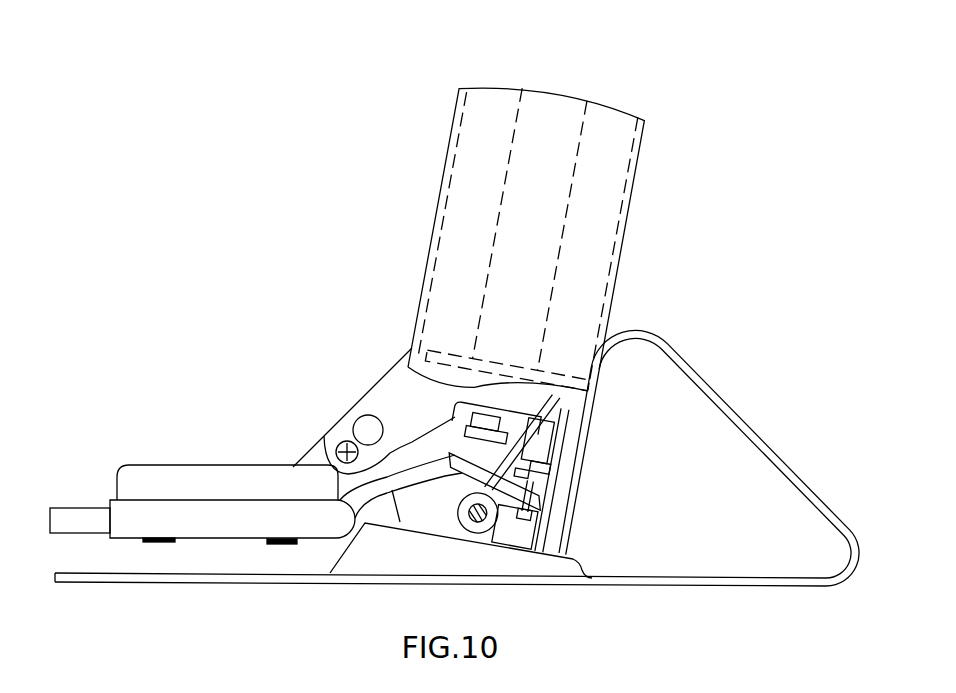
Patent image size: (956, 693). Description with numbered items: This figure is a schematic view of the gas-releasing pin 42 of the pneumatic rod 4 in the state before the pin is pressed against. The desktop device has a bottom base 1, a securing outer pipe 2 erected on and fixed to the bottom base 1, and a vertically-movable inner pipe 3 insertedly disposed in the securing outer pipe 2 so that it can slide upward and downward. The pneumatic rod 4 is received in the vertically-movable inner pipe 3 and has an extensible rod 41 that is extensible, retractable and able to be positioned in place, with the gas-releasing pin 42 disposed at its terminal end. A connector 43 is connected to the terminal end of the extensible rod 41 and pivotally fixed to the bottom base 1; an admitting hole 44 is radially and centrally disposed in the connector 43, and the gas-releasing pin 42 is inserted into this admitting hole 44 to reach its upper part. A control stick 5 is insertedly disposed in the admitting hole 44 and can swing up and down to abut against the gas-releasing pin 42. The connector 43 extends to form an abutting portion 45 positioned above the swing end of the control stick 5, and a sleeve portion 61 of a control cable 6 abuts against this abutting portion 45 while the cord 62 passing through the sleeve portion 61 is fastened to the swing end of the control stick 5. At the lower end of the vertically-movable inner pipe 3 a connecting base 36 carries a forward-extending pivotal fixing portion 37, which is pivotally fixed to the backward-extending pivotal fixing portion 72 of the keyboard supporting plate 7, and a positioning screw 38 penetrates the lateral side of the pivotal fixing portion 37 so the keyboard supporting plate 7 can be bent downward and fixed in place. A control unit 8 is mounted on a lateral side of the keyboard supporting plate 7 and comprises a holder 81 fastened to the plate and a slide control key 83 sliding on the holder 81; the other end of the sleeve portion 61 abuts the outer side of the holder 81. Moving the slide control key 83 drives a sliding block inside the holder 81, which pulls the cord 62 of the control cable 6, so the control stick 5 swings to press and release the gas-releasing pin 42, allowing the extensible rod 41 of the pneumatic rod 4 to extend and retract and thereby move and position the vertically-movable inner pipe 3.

The bottom base 1 is at (748, 427).
The securing outer pipe 2 is at (433, 228).
The vertically-movable inner pipe 3 is at (455, 162).
The pneumatic rod 4 is at (468, 396).
The control stick 5 is at (580, 512).
The control cable 6 is at (372, 494).
The keyboard supporting plate 7 is at (76, 510).
The control unit 8 is at (121, 565).
The connecting base 36 is at (592, 388).
The pivotal fixing portion 37 is at (385, 380).
The positioning screw 38 is at (344, 440).
The extensible rod 41 is at (477, 420).
The gas-releasing pin 42 is at (453, 487).
The connector 43 is at (460, 512).
The admitting hole 44 is at (515, 527).
The abutting portion 45 is at (580, 467).
The sleeve portion 61 is at (580, 445).
The cord 62 is at (580, 490).
The pivotal fixing portion 72 is at (310, 457).
The holder 81 is at (199, 530).
The slide control key 83 is at (202, 477).